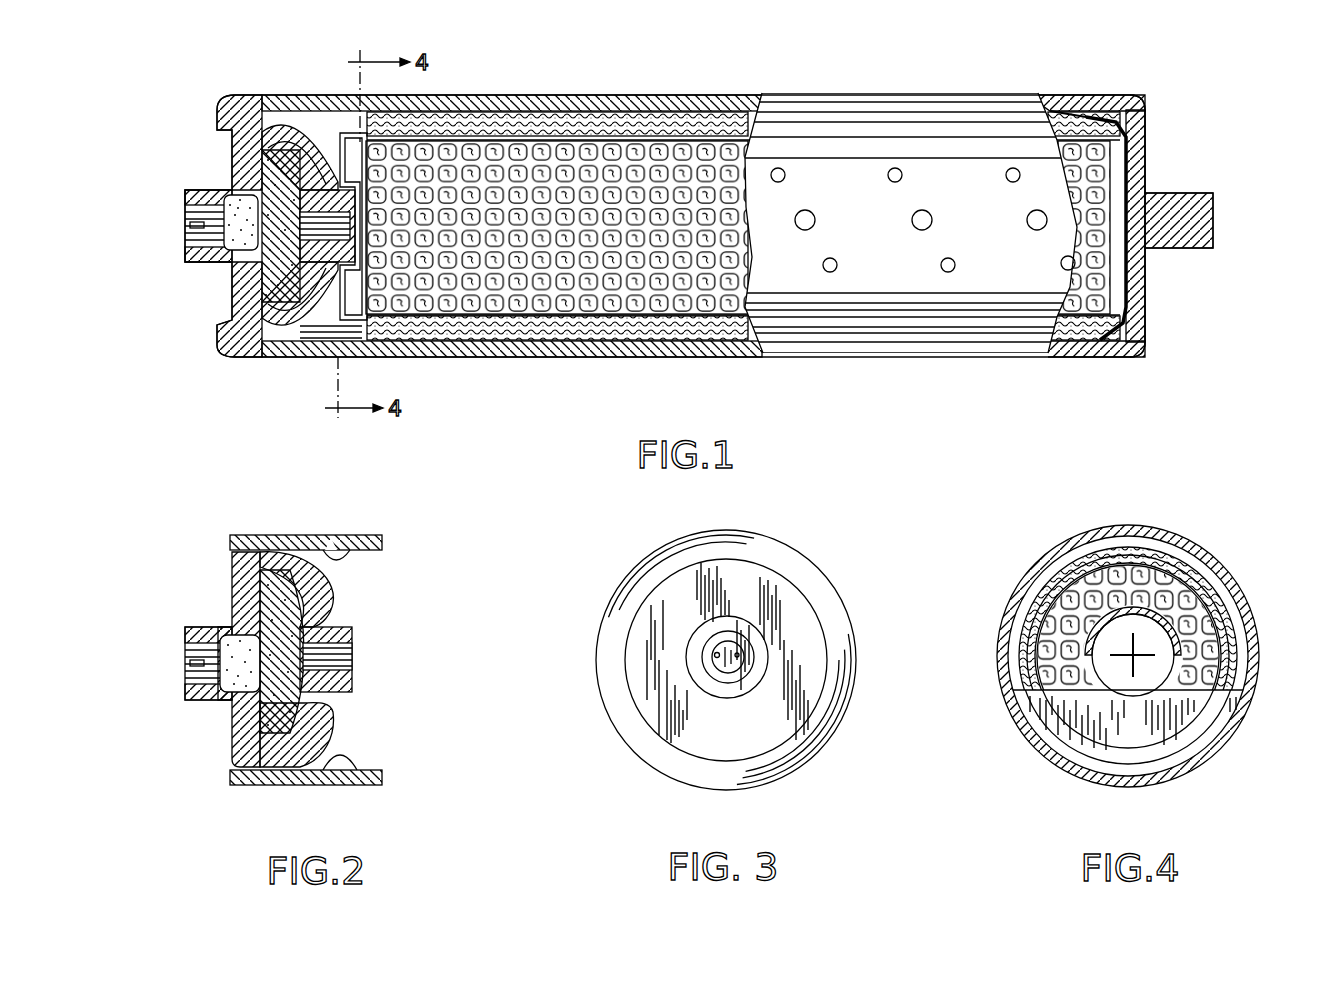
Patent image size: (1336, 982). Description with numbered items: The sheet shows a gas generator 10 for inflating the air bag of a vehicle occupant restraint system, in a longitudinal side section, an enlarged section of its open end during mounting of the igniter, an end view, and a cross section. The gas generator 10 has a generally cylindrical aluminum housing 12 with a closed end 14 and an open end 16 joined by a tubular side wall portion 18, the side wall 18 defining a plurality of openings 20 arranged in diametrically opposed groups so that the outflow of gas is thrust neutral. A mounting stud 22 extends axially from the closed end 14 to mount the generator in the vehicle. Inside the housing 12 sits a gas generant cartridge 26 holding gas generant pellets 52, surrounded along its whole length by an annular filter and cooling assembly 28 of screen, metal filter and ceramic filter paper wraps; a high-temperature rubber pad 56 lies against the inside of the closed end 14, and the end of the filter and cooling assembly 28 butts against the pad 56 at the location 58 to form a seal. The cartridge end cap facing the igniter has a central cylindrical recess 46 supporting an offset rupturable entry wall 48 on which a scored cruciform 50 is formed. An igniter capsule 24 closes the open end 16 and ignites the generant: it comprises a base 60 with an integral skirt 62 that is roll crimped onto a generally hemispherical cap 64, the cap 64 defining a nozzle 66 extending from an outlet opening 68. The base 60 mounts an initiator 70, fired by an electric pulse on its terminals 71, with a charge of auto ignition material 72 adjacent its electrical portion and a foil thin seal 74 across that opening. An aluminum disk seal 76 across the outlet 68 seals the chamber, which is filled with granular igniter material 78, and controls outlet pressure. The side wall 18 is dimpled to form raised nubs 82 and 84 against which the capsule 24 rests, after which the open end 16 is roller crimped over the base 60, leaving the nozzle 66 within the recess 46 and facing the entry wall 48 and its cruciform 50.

In FIG. 1, the gas generator 10 is at (575, 84).
In FIG. 2, the gas generator 10 is at (200, 496).
In FIG. 3, the gas generator 10 is at (620, 562).
In FIG. 4, the gas generator 10 is at (1132, 488).
In FIG. 1, the housing 12 is at (860, 364).
In FIG. 2, the housing 12 is at (285, 528).
In FIG. 3, the housing 12 is at (855, 606).
In FIG. 1, the closed end 14 is at (1147, 292).
In FIG. 1, the open end 16 is at (216, 340).
In FIG. 2, the open end 16 is at (238, 788).
In FIG. 3, the open end 16 is at (642, 760).
In FIG. 1, the tubular side wall portion 18 is at (720, 345).
In FIG. 1, the openings 20 is at (842, 264).
In FIG. 4, the openings 20 is at (1250, 613).
In FIG. 1, the mounting stud 22 is at (1195, 192).
In FIG. 1, the igniter capsule 24 is at (203, 184).
In FIG. 3, the igniter capsule 24 is at (780, 590).
In FIG. 1, the gas generant cartridge 26 is at (428, 310).
In FIG. 4, the gas generant cartridge 26 is at (1045, 720).
In FIG. 1, the filter and cooling assembly 28 is at (578, 318).
In FIG. 4, the filter and cooling assembly 28 is at (1053, 587).
In FIG. 4, the central cylindrical recess 46 is at (1158, 680).
In FIG. 4, the offset rupturable entry wall 48 is at (1145, 683).
In FIG. 4, the scored cruciform 50 is at (1117, 664).
In FIG. 1, the pellets 52 is at (517, 282).
In FIG. 4, the pellets 52 is at (1150, 610).
In FIG. 1, the rubber pad 56 is at (1140, 347).
In FIG. 1, the butting location 58 is at (1070, 118).
In FIG. 2, the base 60 is at (228, 588).
In FIG. 3, the base 60 is at (656, 615).
In FIG. 2, the skirt 62 is at (317, 583).
In FIG. 2, the cap 64 is at (318, 622).
In FIG. 2, the nozzle 66 is at (340, 693).
In FIG. 2, the outlet opening 68 is at (342, 643).
In FIG. 2, the initiator 70 is at (232, 672).
In FIG. 3, the initiator 70 is at (718, 666).
In FIG. 2, the terminals 71 is at (188, 665).
In FIG. 3, the terminals 71 is at (737, 655).
In FIG. 1, the auto ignition material 72 is at (256, 176).
In FIG. 1, the foil thin seal 74 is at (266, 234).
In FIG. 1, the aluminum disk seal 76 is at (286, 262).
In FIG. 1, the igniter material 78 is at (266, 168).
In FIG. 2, the raised nub 82 is at (340, 560).
In FIG. 2, the raised nub 84 is at (347, 762).